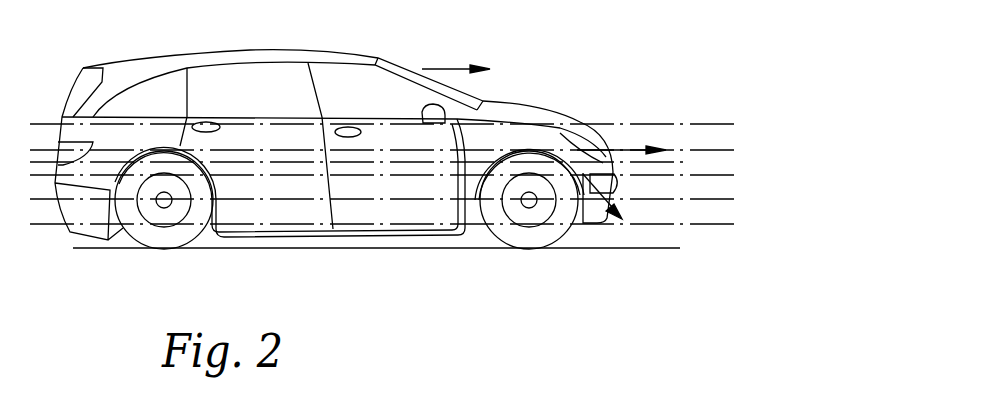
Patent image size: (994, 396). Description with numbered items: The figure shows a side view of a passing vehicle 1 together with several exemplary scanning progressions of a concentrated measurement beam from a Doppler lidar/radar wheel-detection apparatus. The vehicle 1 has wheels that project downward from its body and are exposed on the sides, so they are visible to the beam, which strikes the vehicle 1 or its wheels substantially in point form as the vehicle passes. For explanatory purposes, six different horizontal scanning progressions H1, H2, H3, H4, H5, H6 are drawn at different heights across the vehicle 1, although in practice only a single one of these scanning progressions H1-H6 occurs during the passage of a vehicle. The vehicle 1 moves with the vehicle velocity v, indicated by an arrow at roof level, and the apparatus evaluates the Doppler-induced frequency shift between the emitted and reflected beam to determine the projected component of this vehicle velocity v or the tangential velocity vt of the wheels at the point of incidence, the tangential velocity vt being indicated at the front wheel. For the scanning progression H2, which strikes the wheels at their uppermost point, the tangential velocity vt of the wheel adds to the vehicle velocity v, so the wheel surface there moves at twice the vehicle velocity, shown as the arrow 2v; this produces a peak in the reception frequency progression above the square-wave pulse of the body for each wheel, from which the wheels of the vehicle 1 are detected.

The vehicle 1 is at (162, 95).
The scanning progression H1 is at (740, 124).
The scanning progression H2 is at (740, 150).
The scanning progression H3 is at (690, 162).
The scanning progression H4 is at (740, 175).
The scanning progression H5 is at (740, 199).
The scanning progression H6 is at (740, 224).
The vehicle velocity v is at (456, 53).
The doubled vehicle velocity 2v is at (633, 148).
The tangential velocity vt is at (618, 198).